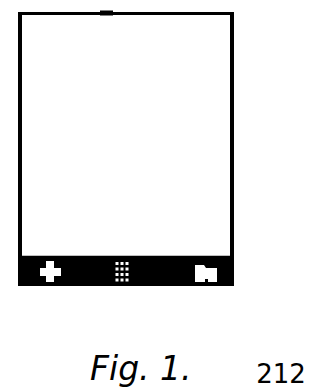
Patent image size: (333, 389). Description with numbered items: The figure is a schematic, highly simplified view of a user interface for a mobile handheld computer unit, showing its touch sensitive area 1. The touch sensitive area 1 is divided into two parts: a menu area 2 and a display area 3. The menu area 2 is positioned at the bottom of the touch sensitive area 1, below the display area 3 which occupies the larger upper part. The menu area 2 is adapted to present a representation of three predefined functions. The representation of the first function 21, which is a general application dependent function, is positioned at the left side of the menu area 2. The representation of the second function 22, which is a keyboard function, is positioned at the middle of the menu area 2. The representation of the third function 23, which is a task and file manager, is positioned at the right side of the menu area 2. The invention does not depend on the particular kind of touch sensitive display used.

The touch sensitive area 1 is at (250, 168).
The menu area 2 is at (234, 273).
The display area 3 is at (194, 94).
The first function 21 is at (49, 286).
The second function 22 is at (122, 286).
The third function 23 is at (205, 286).